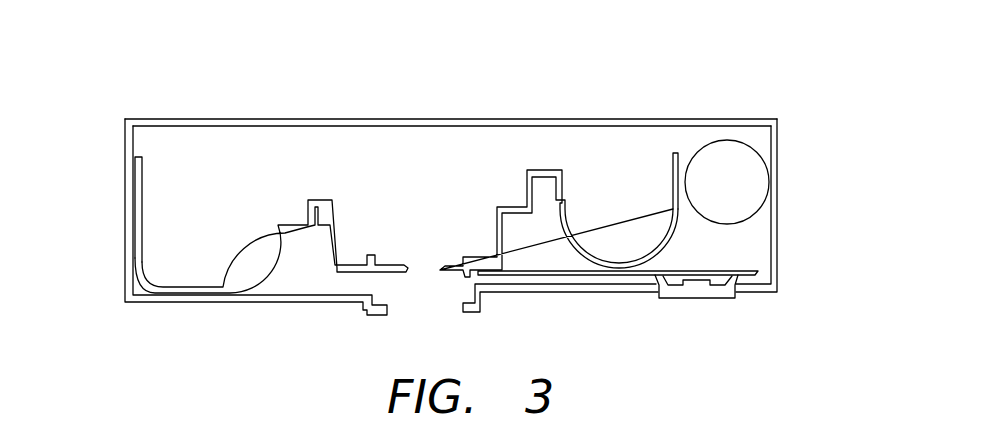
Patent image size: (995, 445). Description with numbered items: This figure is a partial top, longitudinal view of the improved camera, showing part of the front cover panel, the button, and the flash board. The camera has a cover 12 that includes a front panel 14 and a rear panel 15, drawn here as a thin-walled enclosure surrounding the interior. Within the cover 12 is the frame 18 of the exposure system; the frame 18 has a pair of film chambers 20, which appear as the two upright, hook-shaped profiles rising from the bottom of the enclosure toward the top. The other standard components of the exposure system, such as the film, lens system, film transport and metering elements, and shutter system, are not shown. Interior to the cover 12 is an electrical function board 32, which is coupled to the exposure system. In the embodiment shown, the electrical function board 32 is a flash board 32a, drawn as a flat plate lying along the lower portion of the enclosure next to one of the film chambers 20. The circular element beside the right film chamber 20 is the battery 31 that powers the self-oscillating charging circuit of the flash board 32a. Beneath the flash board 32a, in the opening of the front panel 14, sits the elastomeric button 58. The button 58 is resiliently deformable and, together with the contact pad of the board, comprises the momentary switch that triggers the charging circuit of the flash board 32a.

The cover 12 is at (474, 190).
The front panel 14 is at (125, 144).
The rear panel 15 is at (457, 118).
The frame 18 is at (270, 265).
The film chambers 20 is at (142, 182).
The battery 31 is at (753, 148).
The electrical function board 32 is at (672, 320).
The flash board 32a is at (740, 268).
The elastomeric button 58 is at (700, 298).